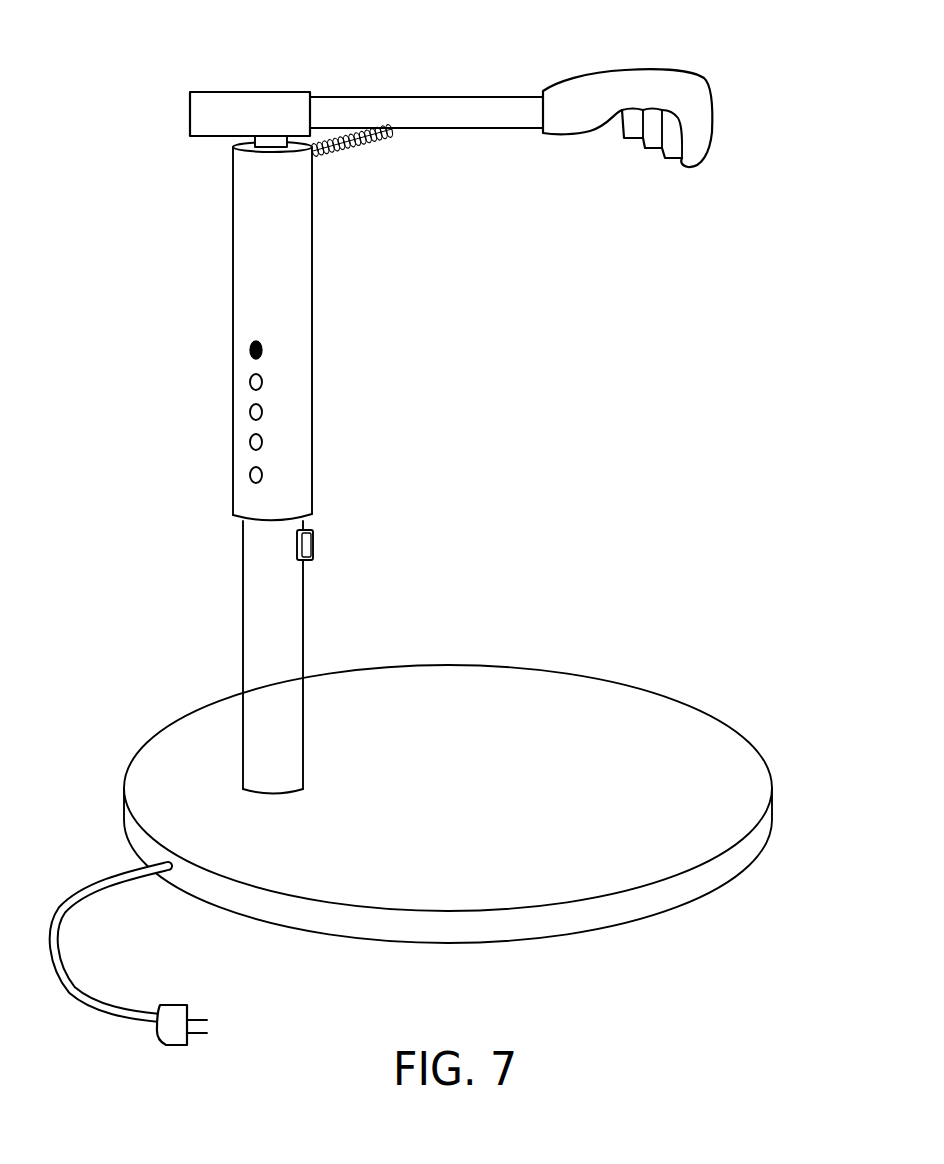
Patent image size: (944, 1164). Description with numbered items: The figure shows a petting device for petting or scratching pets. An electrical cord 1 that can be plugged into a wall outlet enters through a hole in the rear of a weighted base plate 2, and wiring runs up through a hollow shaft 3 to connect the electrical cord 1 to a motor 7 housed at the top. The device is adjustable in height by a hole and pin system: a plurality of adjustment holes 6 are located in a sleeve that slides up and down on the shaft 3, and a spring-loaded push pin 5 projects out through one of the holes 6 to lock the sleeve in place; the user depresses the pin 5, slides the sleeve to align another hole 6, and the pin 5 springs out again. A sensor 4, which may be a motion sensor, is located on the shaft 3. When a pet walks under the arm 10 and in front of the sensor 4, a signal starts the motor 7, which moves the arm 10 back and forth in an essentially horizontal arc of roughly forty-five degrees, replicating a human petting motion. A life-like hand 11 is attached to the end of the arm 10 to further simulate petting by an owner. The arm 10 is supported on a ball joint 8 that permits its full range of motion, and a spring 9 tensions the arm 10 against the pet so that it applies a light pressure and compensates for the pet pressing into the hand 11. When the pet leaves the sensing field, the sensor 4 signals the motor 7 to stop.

The electrical cord 1 is at (85, 994).
The weighted base plate 2 is at (605, 722).
The shaft 3 is at (262, 612).
The sensor 4 is at (306, 541).
The spring-loaded push pin 5 is at (252, 355).
The adjustment holes 6 is at (253, 417).
The motor 7 is at (228, 107).
The ball joint 8 is at (262, 143).
The spring 9 is at (347, 158).
The arm 10 is at (402, 117).
The life-like hand 11 is at (682, 78).